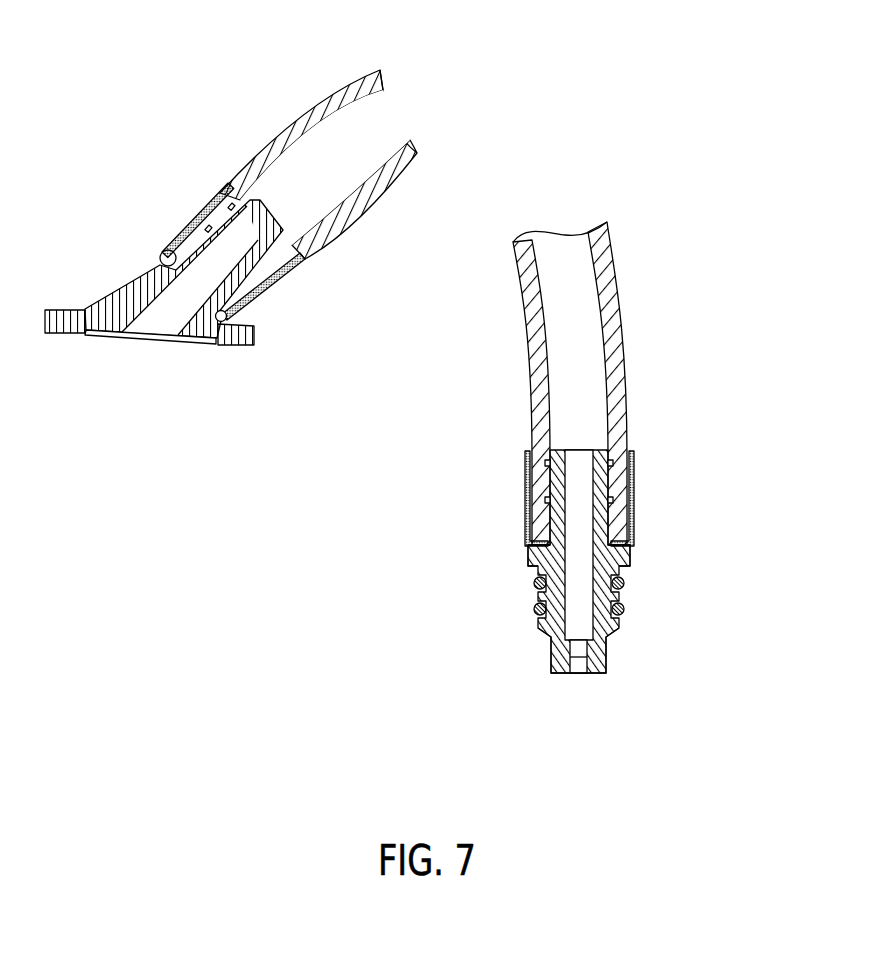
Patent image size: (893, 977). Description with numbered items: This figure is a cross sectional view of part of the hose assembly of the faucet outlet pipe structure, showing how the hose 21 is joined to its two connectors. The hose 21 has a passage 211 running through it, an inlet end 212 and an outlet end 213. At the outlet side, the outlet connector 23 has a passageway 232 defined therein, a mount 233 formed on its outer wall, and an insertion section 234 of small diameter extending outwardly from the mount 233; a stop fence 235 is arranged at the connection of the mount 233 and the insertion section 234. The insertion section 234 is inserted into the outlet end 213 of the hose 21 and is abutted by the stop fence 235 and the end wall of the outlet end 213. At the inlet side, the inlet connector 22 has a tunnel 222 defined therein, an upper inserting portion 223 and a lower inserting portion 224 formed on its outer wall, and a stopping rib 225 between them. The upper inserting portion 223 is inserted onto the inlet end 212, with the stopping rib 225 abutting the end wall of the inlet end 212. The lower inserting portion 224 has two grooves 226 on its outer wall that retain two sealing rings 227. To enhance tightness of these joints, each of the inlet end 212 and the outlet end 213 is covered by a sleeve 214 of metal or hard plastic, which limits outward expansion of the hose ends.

The hose 21 is at (303, 112).
The passage 211 is at (350, 125).
The inlet end 212 is at (539, 568).
The outlet end 213 is at (222, 328).
The sleeve 214 is at (203, 218).
The inlet connector 22 is at (595, 677).
The tunnel 222 is at (579, 458).
The upper inserting portion 223 is at (610, 484).
The lower inserting portion 224 is at (539, 627).
The stopping rib 225 is at (633, 550).
The grooves 226 is at (535, 583).
The sealing rings 227 is at (624, 587).
The outlet connector 23 is at (70, 335).
The passageway 232 is at (158, 325).
The mount 233 is at (115, 297).
The insertion section 234 is at (274, 275).
The stop fence 235 is at (160, 252).